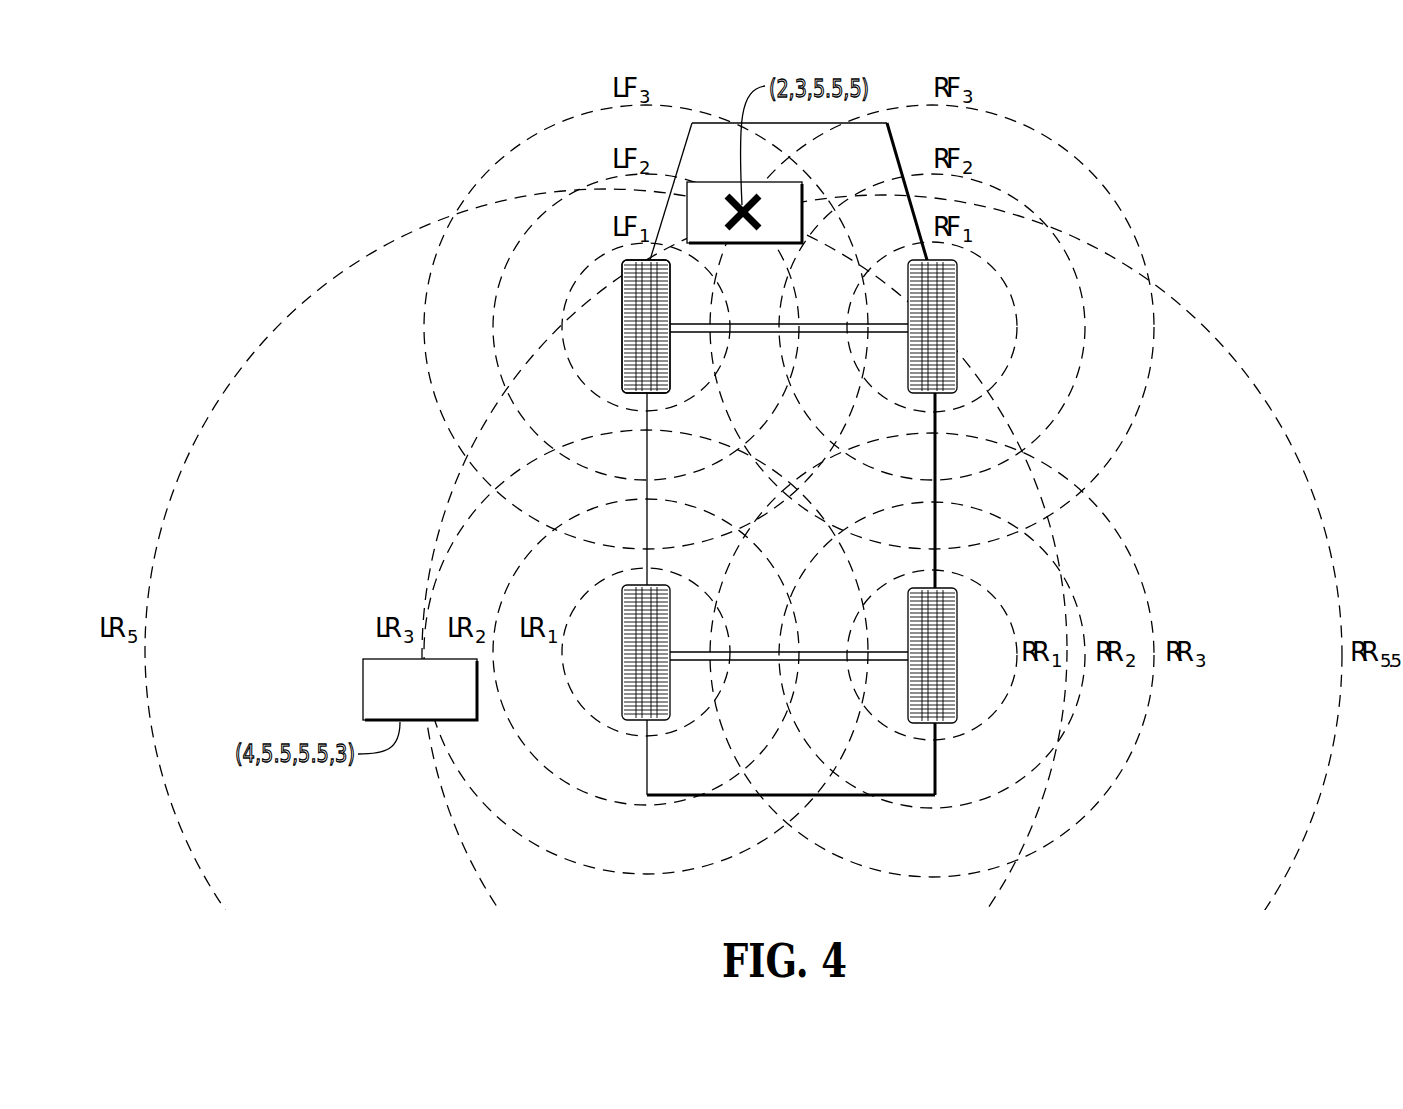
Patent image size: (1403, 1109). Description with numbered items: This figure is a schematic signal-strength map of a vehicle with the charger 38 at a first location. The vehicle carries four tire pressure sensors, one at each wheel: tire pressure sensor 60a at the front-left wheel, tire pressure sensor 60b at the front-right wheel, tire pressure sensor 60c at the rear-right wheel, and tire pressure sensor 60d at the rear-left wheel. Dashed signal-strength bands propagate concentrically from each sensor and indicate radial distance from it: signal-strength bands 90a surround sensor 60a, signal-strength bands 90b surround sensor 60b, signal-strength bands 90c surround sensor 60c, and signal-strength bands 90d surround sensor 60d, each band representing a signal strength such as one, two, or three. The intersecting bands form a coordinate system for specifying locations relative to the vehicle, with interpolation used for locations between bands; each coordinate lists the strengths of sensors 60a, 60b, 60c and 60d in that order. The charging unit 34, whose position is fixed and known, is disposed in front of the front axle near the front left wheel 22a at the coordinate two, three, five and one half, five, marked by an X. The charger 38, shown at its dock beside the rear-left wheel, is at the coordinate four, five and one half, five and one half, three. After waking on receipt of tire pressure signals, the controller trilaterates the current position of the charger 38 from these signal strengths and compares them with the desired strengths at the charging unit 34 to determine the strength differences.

The front left wheel 22a is at (622, 343).
The charging unit 34 is at (716, 182).
The charger 38 is at (363, 688).
The tire pressure sensor 60a is at (622, 280).
The tire pressure sensor 60b is at (957, 280).
The tire pressure sensor 60c is at (957, 619).
The tire pressure sensor 60d is at (622, 619).
The signal-strength bands 90a is at (500, 158).
The signal-strength bands 90b is at (1087, 162).
The signal-strength bands 90c is at (1080, 823).
The signal-strength bands 90d is at (502, 823).